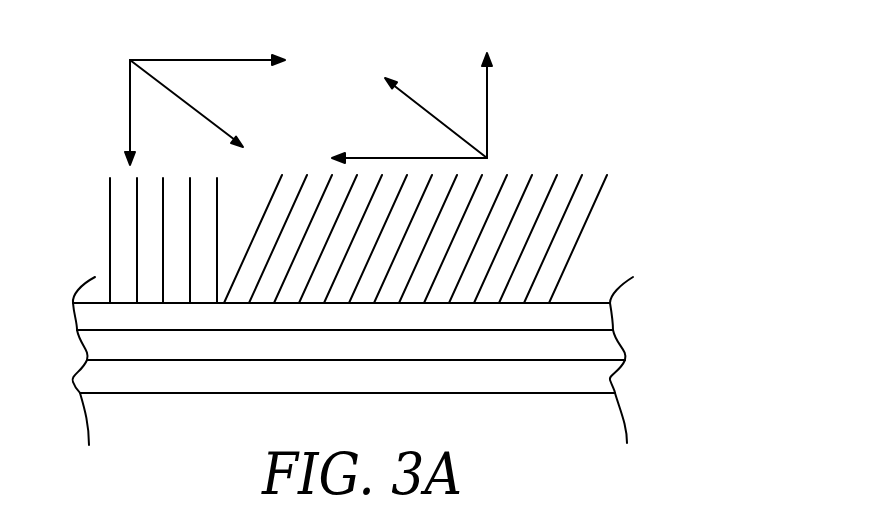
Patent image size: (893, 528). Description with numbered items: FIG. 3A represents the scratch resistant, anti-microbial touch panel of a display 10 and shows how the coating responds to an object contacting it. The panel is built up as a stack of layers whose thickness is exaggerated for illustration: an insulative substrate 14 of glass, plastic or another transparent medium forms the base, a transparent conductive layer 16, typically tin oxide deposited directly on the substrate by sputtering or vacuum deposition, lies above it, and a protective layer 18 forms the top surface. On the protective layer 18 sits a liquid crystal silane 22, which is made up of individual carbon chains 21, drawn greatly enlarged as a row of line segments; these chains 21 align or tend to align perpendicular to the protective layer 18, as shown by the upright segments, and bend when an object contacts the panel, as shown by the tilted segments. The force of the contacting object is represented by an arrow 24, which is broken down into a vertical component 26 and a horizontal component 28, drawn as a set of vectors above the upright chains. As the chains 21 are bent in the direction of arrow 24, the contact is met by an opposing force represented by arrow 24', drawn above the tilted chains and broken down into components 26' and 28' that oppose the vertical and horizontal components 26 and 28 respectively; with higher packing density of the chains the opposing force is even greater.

The display 10 is at (460, 361).
The insulative substrate 14 is at (600, 383).
The transparent conductive layer 16 is at (613, 350).
The protective layer 18 is at (602, 319).
The carbon chains 21 is at (557, 180).
The liquid crystal silane 22 is at (440, 208).
The arrow 24 is at (205, 103).
The vertical component 26 is at (98, 112).
The horizontal component 28 is at (207, 40).
The arrow 24' is at (436, 111).
The component 26' is at (515, 105).
The component 28' is at (402, 140).